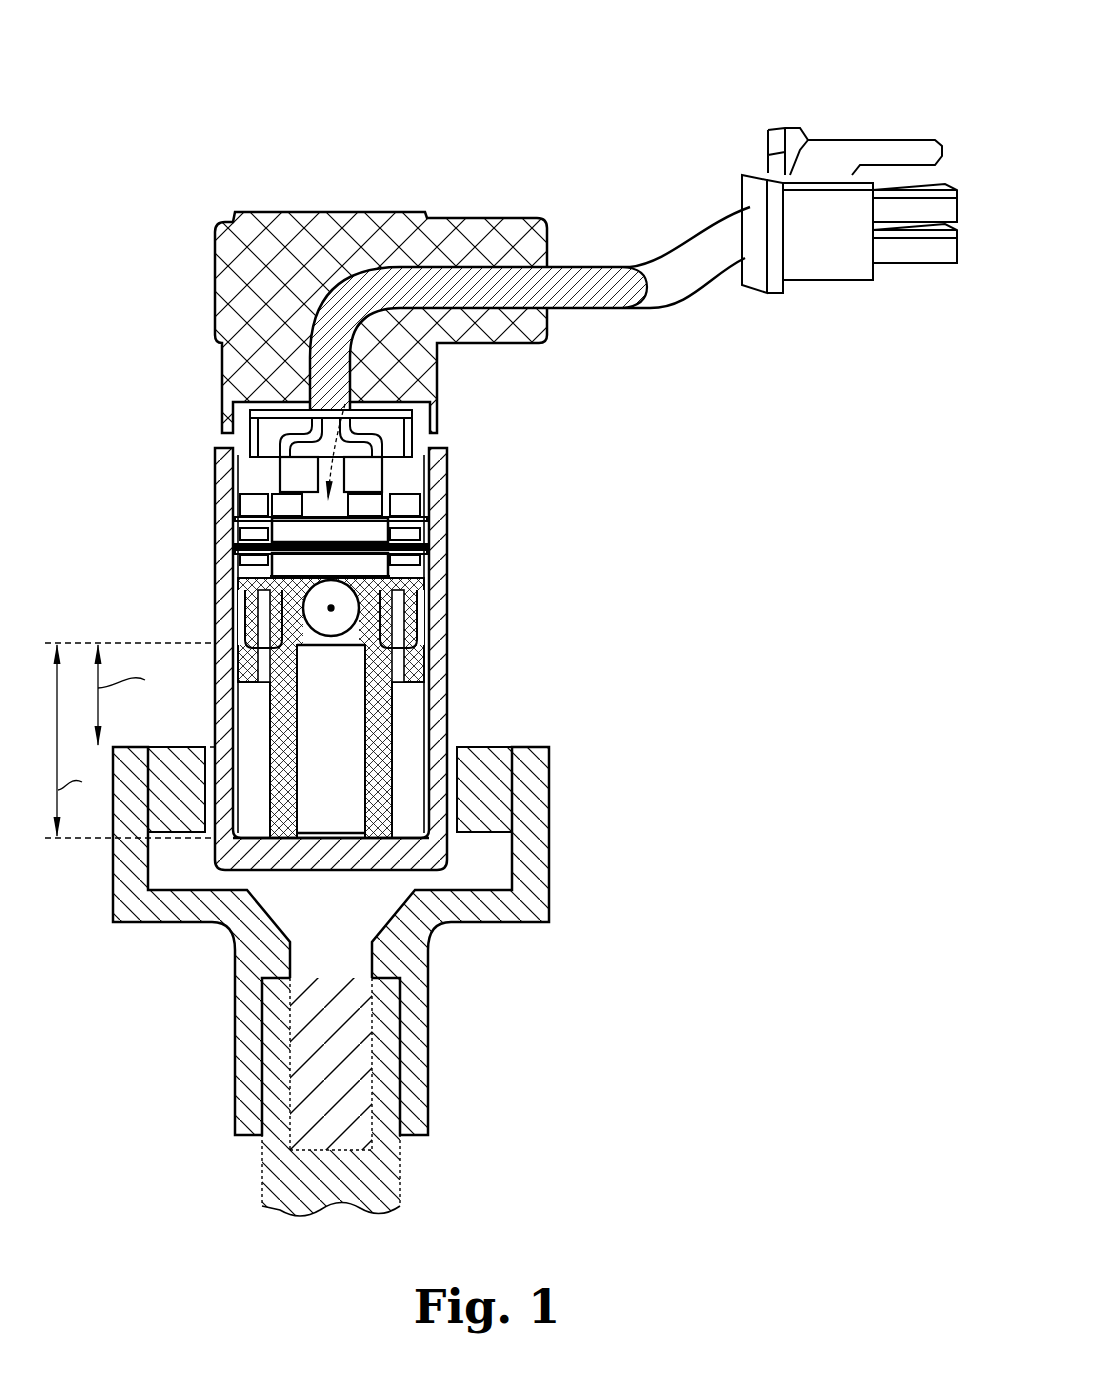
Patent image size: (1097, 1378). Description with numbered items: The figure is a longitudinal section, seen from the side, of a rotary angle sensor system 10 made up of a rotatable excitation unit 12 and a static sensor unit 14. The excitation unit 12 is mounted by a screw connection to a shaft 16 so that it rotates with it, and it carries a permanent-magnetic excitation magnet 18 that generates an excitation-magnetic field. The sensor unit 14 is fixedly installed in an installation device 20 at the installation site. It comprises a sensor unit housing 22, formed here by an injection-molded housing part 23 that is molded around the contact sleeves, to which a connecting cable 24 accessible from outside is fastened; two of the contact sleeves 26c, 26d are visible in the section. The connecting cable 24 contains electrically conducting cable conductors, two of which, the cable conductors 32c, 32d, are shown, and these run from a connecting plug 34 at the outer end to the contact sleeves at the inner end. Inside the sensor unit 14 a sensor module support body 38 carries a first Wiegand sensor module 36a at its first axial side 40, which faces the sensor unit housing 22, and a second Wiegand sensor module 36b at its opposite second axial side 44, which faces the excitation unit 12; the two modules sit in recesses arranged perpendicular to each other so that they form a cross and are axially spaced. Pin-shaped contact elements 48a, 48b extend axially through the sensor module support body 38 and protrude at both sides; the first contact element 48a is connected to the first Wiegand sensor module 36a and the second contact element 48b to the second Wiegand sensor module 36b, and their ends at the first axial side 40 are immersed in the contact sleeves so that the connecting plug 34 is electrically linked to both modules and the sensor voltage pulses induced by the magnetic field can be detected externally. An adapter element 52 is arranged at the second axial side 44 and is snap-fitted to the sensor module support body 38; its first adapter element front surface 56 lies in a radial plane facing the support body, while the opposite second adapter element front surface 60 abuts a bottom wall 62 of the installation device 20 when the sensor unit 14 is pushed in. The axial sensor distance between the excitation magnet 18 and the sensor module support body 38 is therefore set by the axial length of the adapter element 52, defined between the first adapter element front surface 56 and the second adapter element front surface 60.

The rotary angle sensor system 10 is at (268, 122).
The excitation unit 12 is at (556, 748).
The sensor unit 14 is at (341, 192).
The shaft 16 is at (290, 1165).
The excitation magnet 18 is at (488, 790).
The installation device 20 is at (200, 630).
The sensor unit housing 22 is at (450, 212).
The injection-molded housing part 23 is at (428, 470).
The connecting cable 24 is at (683, 255).
The contact sleeve 26c is at (385, 488).
The contact sleeve 26d is at (282, 478).
The cable conductor 32c is at (410, 432).
The cable conductor 32d is at (280, 430).
The connecting plug 34 is at (858, 133).
The first Wiegand sensor module 36a is at (432, 546).
The second Wiegand sensor module 36b is at (432, 656).
The sensor module support body 38 is at (440, 575).
The first axial side 40 is at (360, 412).
The second axial side 44 is at (331, 652).
The first contact element 48a is at (262, 514).
The second contact element 48b is at (430, 518).
The adapter element 52 is at (392, 722).
The first adapter element front surface 56 is at (348, 654).
The second adapter element front surface 60 is at (288, 838).
The bottom wall 62 is at (335, 855).